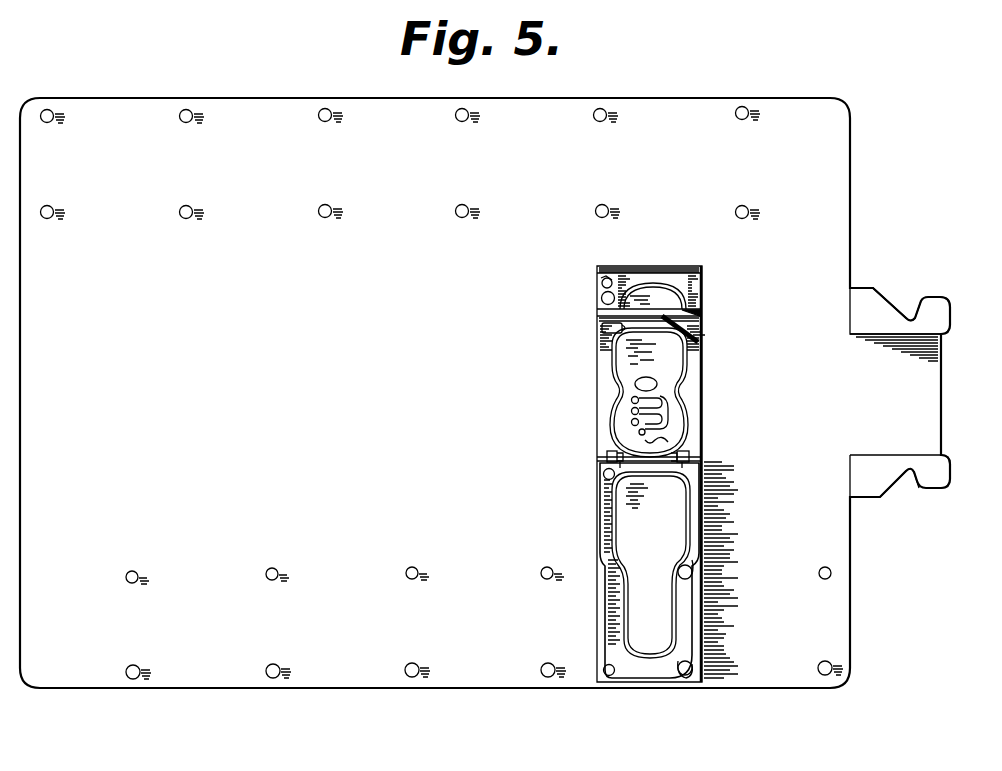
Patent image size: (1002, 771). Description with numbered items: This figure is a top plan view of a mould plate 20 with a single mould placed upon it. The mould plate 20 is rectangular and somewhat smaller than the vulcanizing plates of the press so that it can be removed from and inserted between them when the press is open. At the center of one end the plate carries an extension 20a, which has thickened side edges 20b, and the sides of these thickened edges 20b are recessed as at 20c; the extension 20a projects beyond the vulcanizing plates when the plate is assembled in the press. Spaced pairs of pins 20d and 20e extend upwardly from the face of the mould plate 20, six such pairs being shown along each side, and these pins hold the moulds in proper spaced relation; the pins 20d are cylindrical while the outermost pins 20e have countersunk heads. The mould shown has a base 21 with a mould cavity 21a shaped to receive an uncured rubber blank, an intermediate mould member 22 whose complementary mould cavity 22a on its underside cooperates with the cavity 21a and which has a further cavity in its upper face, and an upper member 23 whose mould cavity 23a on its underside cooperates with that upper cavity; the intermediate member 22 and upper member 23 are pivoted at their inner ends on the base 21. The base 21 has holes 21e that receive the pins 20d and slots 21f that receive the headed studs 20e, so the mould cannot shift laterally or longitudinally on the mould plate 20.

The mould plate 20 is at (362, 381).
The extension 20a is at (870, 350).
The thickened side edges 20b is at (940, 303).
The recess 20c is at (895, 302).
The pins 20d is at (137, 575).
The pins 20e is at (138, 691).
The base 21 is at (605, 596).
The mould cavity 21a is at (623, 622).
The holes 21e is at (692, 563).
The slots 21f is at (682, 680).
The intermediate mould member 22 is at (605, 353).
The complementary mould cavity 22a is at (678, 410).
The upper member 23 is at (597, 288).
The mould cavity 23a is at (652, 288).